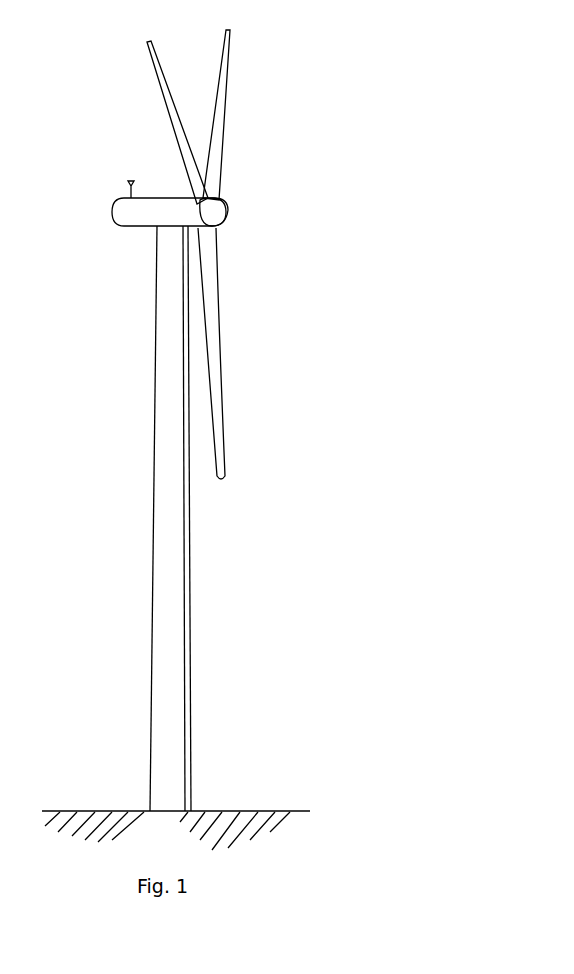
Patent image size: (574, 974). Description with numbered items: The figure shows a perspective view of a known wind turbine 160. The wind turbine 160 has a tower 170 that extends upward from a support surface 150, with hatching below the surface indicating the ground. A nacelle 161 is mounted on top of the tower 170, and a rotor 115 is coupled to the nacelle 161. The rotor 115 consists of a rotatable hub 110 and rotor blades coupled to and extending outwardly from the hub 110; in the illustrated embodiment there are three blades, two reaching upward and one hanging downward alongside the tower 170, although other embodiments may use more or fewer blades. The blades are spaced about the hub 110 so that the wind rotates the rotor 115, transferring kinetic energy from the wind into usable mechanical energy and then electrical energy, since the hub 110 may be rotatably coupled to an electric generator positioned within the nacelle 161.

The wind turbine 160 is at (306, 84).
The support surface 150 is at (102, 808).
The tower 170 is at (157, 602).
The nacelle 161 is at (142, 229).
The hub 110 is at (228, 218).
The rotor 115 is at (230, 199).